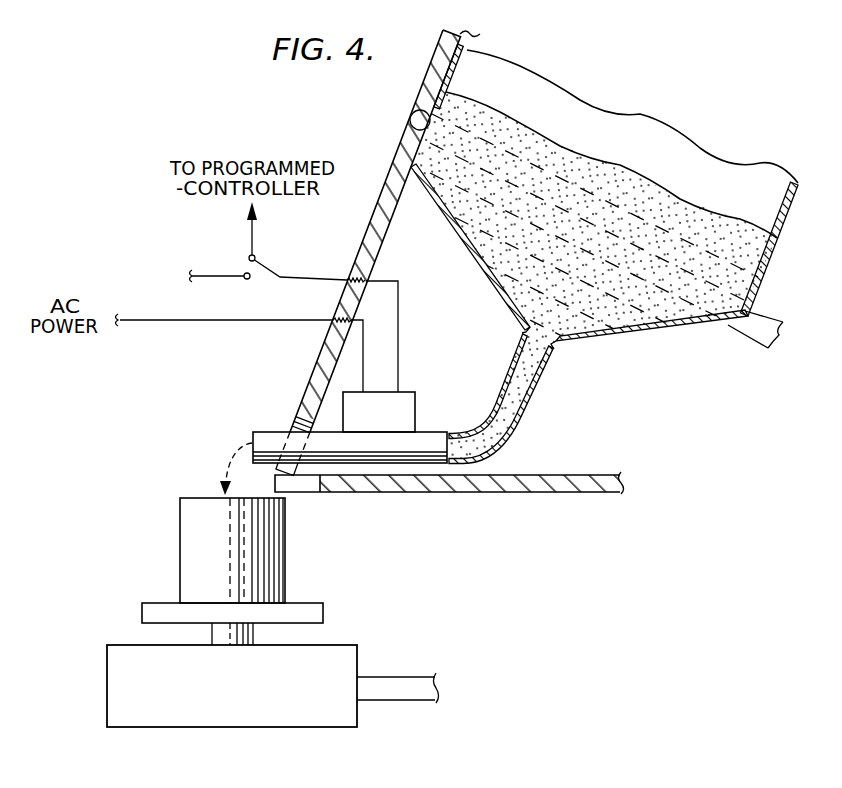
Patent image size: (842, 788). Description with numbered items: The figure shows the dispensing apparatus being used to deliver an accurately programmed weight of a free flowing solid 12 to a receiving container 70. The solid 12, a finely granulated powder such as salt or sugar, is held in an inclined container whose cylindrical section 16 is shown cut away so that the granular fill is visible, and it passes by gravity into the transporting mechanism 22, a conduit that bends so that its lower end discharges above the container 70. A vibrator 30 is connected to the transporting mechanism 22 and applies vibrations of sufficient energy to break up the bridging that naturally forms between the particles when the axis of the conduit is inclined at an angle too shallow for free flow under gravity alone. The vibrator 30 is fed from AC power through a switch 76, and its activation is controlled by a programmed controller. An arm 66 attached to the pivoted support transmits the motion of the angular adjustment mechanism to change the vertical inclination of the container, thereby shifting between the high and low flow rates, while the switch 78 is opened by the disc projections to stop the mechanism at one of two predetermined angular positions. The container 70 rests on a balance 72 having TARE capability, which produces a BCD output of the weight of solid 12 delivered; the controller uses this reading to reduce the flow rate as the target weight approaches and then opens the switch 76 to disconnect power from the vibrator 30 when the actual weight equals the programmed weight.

The free flowing solid 12 is at (712, 212).
The cylindrical section 16 is at (764, 282).
The transporting mechanism 22 is at (538, 436).
The vibrator 30 is at (418, 402).
The arm 66 is at (754, 330).
The container 70 is at (180, 552).
The balance 72 is at (245, 701).
The switch 76 is at (270, 263).
The switch 78 is at (413, 677).